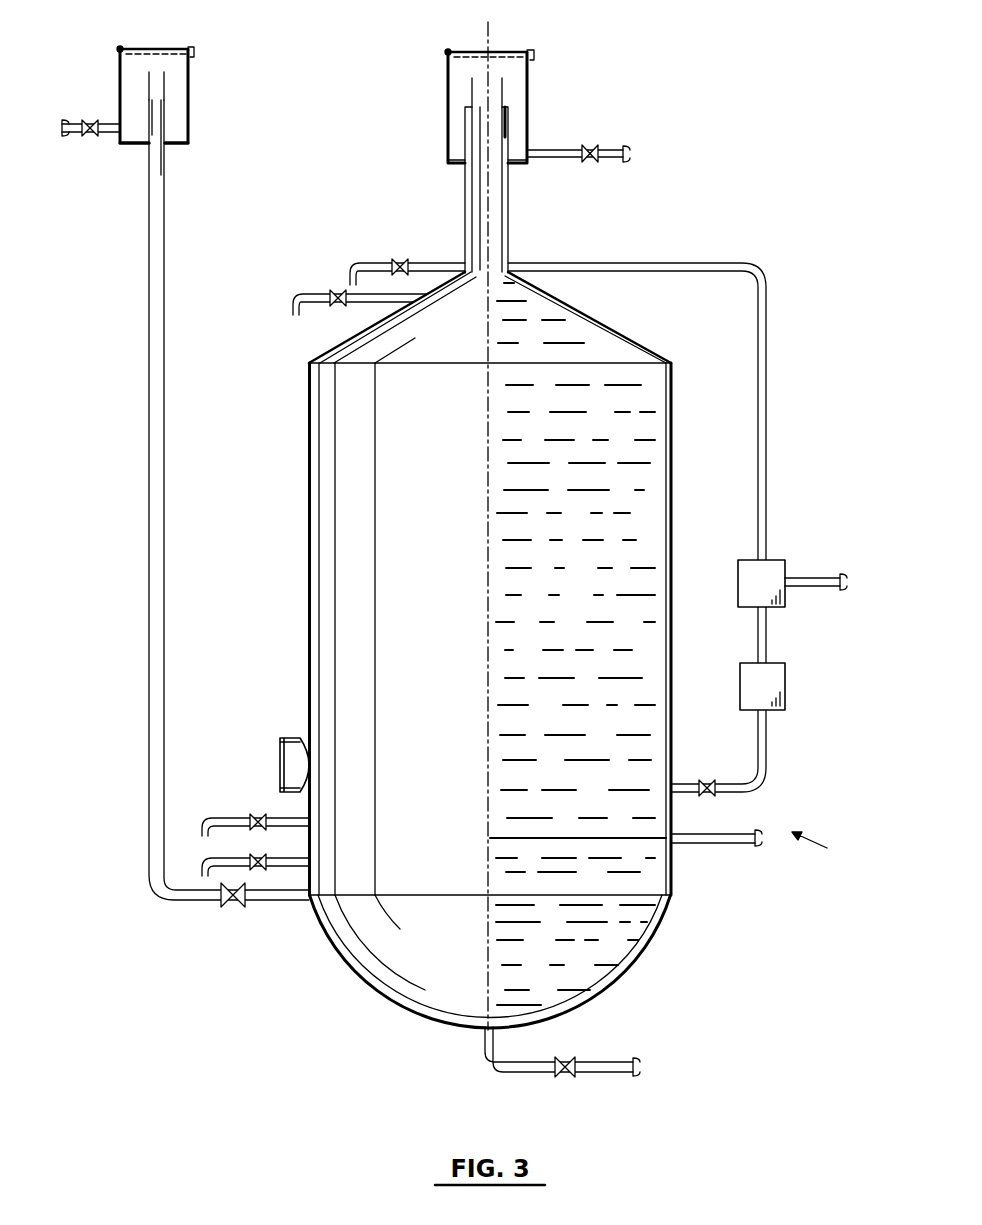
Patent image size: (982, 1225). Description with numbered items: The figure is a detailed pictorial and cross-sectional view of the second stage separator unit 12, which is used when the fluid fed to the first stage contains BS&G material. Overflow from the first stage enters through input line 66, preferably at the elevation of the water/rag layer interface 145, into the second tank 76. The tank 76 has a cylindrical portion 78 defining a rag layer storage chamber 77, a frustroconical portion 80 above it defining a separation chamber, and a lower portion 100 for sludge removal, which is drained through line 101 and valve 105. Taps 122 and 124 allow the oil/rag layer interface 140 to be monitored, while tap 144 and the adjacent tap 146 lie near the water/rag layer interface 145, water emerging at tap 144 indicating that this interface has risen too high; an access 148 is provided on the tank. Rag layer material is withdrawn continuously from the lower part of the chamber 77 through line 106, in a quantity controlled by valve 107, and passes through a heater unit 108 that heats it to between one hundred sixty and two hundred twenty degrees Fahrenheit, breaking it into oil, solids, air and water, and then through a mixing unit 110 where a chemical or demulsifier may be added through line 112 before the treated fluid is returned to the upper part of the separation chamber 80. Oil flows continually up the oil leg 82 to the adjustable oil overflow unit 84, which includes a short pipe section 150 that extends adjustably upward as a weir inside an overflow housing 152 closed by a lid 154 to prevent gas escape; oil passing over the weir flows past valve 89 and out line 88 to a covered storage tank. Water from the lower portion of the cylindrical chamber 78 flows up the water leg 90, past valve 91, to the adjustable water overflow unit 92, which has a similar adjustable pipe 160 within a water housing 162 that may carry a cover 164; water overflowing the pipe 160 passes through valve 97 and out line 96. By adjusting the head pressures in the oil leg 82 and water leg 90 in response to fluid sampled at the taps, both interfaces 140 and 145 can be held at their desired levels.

The second stage separator unit 12 is at (823, 853).
The input line 66 is at (712, 846).
The second tank 76 is at (455, 652).
The rag layer storage chamber 77 is at (588, 618).
The cylindrical portion 78 is at (306, 424).
The frustroconical portion 80 is at (336, 350).
The oil leg 82 is at (510, 237).
The adjustable oil overflow unit 84 is at (447, 140).
The oil line 88 is at (556, 160).
The valve 89 is at (592, 146).
The water leg 90 is at (165, 608).
The valve 91 is at (238, 904).
The adjustable water overflow unit 92 is at (183, 148).
The water outlet line 96 is at (112, 135).
The valve 97 is at (97, 133).
The lower portion 100 is at (644, 966).
The line 101 is at (484, 1066).
The valve 105 is at (568, 1060).
The line 106 is at (768, 744).
The valve 107 is at (711, 781).
The heater unit 108 is at (782, 678).
The mixing unit 110 is at (774, 565).
The chemical line 112 is at (816, 578).
The tap 122 is at (368, 296).
The tap 124 is at (433, 262).
The oil/rag layer interface 140 is at (490, 317).
The tap 144 is at (292, 818).
The water/rag layer interface 145 is at (520, 835).
The jacket pipe 146 is at (293, 868).
The access 148 is at (280, 736).
The pipe section 150 is at (503, 92).
The overflow housing 152 is at (447, 90).
The lid 154 is at (507, 50).
The adjustable pipe 160 is at (165, 85).
The water housing 162 is at (189, 116).
The cover 164 is at (172, 47).